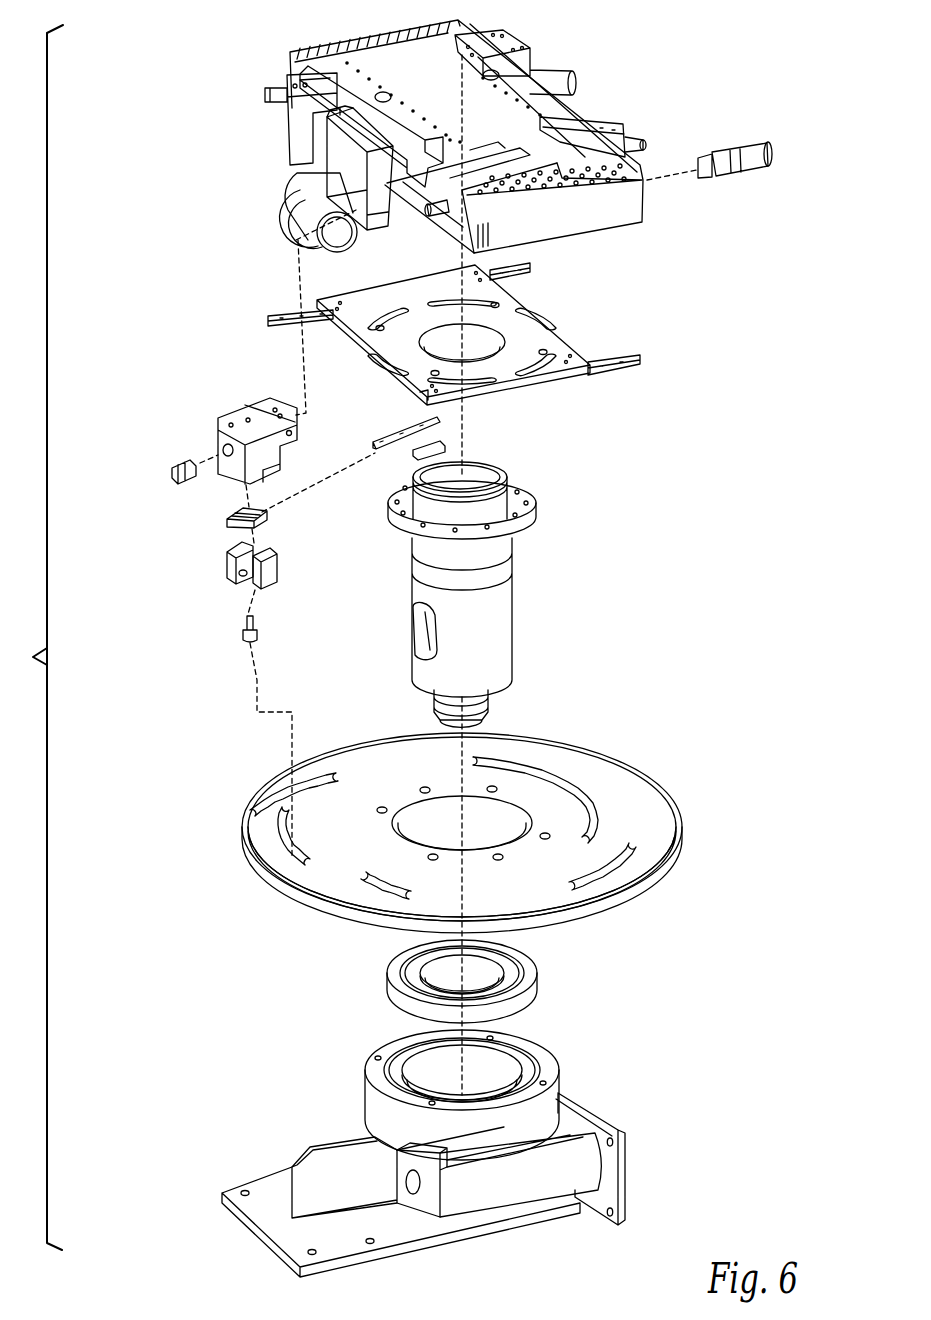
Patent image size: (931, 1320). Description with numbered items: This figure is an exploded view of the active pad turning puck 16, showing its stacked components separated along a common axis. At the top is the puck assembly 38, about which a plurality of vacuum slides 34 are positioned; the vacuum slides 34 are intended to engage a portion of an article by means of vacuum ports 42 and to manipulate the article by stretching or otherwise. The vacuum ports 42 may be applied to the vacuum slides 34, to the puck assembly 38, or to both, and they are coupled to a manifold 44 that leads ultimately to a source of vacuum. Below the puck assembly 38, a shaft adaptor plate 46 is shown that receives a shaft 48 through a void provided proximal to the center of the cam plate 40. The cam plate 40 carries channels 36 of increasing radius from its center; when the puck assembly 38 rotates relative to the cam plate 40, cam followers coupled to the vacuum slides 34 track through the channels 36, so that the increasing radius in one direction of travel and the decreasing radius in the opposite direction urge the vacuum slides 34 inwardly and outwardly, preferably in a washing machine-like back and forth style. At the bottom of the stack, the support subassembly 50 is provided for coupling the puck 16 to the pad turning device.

The active pad turning puck 16 is at (34, 637).
The vacuum slides 34 is at (510, 38).
The channels 36 is at (573, 773).
The puck assembly 38 is at (383, 57).
The cam plate 40 is at (506, 812).
The vacuum ports 42 is at (570, 185).
The manifold 44 is at (298, 190).
The shaft adaptor plate 46 is at (513, 303).
The shaft 48 is at (477, 613).
The support subassembly 50 is at (590, 1092).